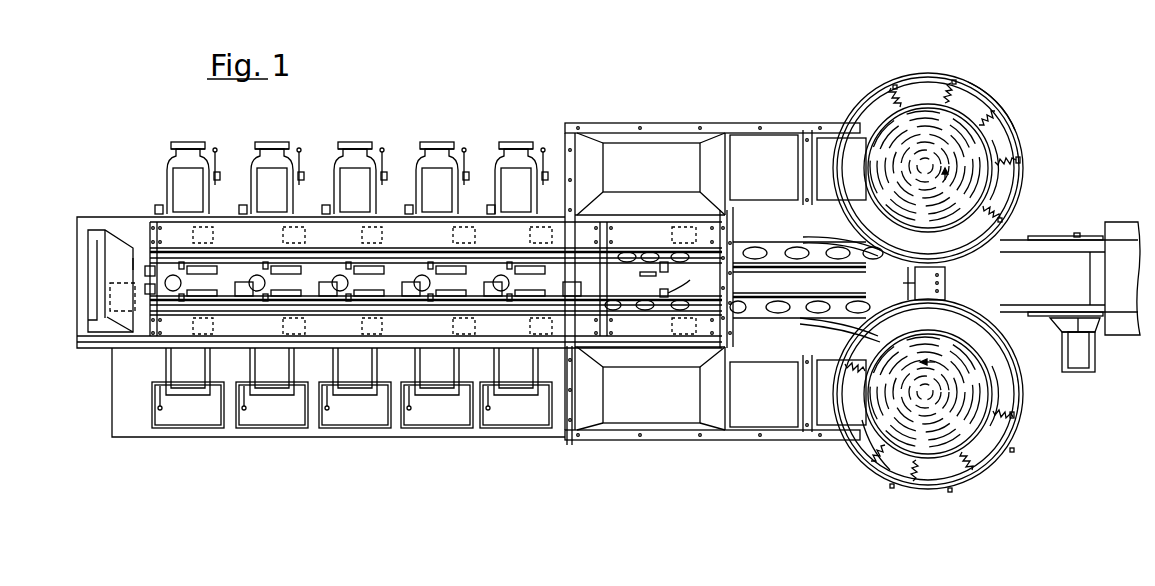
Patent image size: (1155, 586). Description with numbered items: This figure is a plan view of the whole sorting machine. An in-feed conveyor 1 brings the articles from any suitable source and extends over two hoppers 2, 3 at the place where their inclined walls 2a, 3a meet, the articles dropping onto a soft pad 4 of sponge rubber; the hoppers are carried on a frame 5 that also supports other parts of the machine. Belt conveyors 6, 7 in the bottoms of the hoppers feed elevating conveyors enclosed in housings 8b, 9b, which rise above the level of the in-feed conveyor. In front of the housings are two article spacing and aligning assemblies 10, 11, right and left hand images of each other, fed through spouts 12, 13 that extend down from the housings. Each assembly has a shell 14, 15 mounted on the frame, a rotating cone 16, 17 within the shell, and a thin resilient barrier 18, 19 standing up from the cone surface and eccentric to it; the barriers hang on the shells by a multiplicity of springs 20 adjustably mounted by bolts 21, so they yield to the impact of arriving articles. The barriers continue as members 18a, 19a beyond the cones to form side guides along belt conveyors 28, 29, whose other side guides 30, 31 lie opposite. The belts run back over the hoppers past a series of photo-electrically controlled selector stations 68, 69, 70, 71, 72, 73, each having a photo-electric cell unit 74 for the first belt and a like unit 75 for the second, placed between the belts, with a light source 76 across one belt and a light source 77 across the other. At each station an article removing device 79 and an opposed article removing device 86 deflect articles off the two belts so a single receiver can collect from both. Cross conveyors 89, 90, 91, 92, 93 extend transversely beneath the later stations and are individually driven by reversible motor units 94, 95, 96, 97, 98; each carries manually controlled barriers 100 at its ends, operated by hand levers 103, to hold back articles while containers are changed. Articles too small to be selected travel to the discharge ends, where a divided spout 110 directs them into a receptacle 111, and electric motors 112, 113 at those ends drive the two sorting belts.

The in-feed conveyor 1 is at (1058, 262).
The hopper 2 is at (680, 137).
The inclined wall 2a is at (645, 213).
The hopper 3 is at (655, 37).
The inclined wall 3a is at (648, 364).
The soft pad 4 is at (692, 74).
The frame 5 is at (1055, 176).
The belt conveyor 6 is at (515, 79).
The belt conveyor 7 is at (656, 403).
The housing 8b is at (774, 177).
The housing 9b is at (772, 401).
The article spacing and aligning assembly 10 is at (889, 78).
The article spacing and aligning assembly 11 is at (937, 488).
The spout 12 is at (848, 175).
The spout 13 is at (848, 399).
The shell 14 is at (205, 275).
The shell 15 is at (1015, 429).
The rotating cone 16 is at (923, 135).
The rotating cone 17 is at (965, 403).
The resilient barrier 18 is at (994, 183).
The member 18a is at (866, 263).
The resilient barrier 19 is at (994, 412).
The member 19a is at (880, 295).
The springs 20 is at (947, 88).
The bolts 21 is at (1005, 110).
The belt conveyor 28 is at (234, 265).
The belt conveyor 29 is at (222, 308).
The side guide 30 is at (832, 242).
The side guide 31 is at (808, 315).
The selector station 68 is at (703, 293).
The selector station 69 is at (563, 288).
The selector station 70 is at (484, 288).
The selector station 71 is at (402, 288).
The selector station 72 is at (319, 288).
The selector station 73 is at (235, 288).
The photo-electric cell unit 74 is at (663, 274).
The photo-electric cell unit 75 is at (202, 296).
The light source 76 is at (193, 238).
The light source 77 is at (193, 328).
The article removing device 79 is at (176, 270).
The article removing device 86 is at (660, 293).
The cross conveyor 89 is at (525, 204).
The cross conveyor 90 is at (446, 204).
The cross conveyor 91 is at (364, 204).
The cross conveyor 92 is at (281, 204).
The cross conveyor 93 is at (197, 204).
The reversible motor unit 94 is at (491, 201).
The reversible motor unit 95 is at (409, 201).
The reversible motor unit 96 is at (326, 201).
The reversible motor unit 97 is at (242, 205).
The reversible motor unit 98 is at (158, 205).
The manually controlled barrier 100 is at (519, 405).
The hand lever 103 is at (216, 148).
The divided spout 110 is at (104, 272).
The receptacle 111 is at (100, 228).
The electric motor 112 is at (145, 270).
The electric motor 113 is at (145, 290).